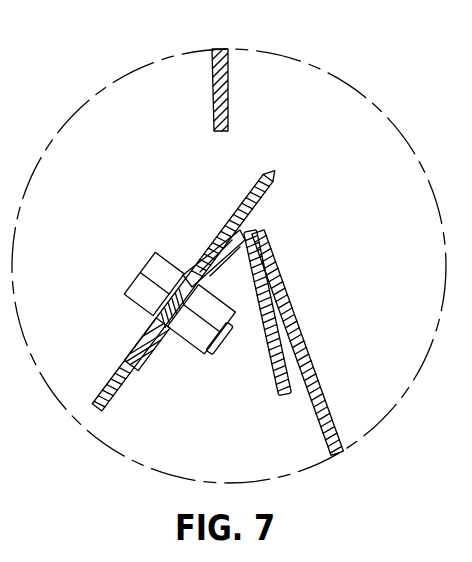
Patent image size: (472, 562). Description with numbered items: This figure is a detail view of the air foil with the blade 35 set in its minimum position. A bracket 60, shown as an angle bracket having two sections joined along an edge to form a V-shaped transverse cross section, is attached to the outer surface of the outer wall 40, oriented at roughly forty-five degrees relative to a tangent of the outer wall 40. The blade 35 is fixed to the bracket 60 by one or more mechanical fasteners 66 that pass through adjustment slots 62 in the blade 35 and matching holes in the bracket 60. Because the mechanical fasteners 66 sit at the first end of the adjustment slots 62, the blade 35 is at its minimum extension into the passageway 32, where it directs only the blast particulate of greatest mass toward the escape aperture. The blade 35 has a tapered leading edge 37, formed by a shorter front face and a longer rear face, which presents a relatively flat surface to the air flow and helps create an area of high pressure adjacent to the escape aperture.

The passageway 32 is at (386, 226).
The blade 35 is at (258, 193).
The leading edge 37 is at (271, 164).
The outer wall 40 is at (213, 91).
The bracket 60 is at (277, 352).
The adjustment slots 62 is at (135, 343).
The mechanical fasteners 66 is at (180, 256).